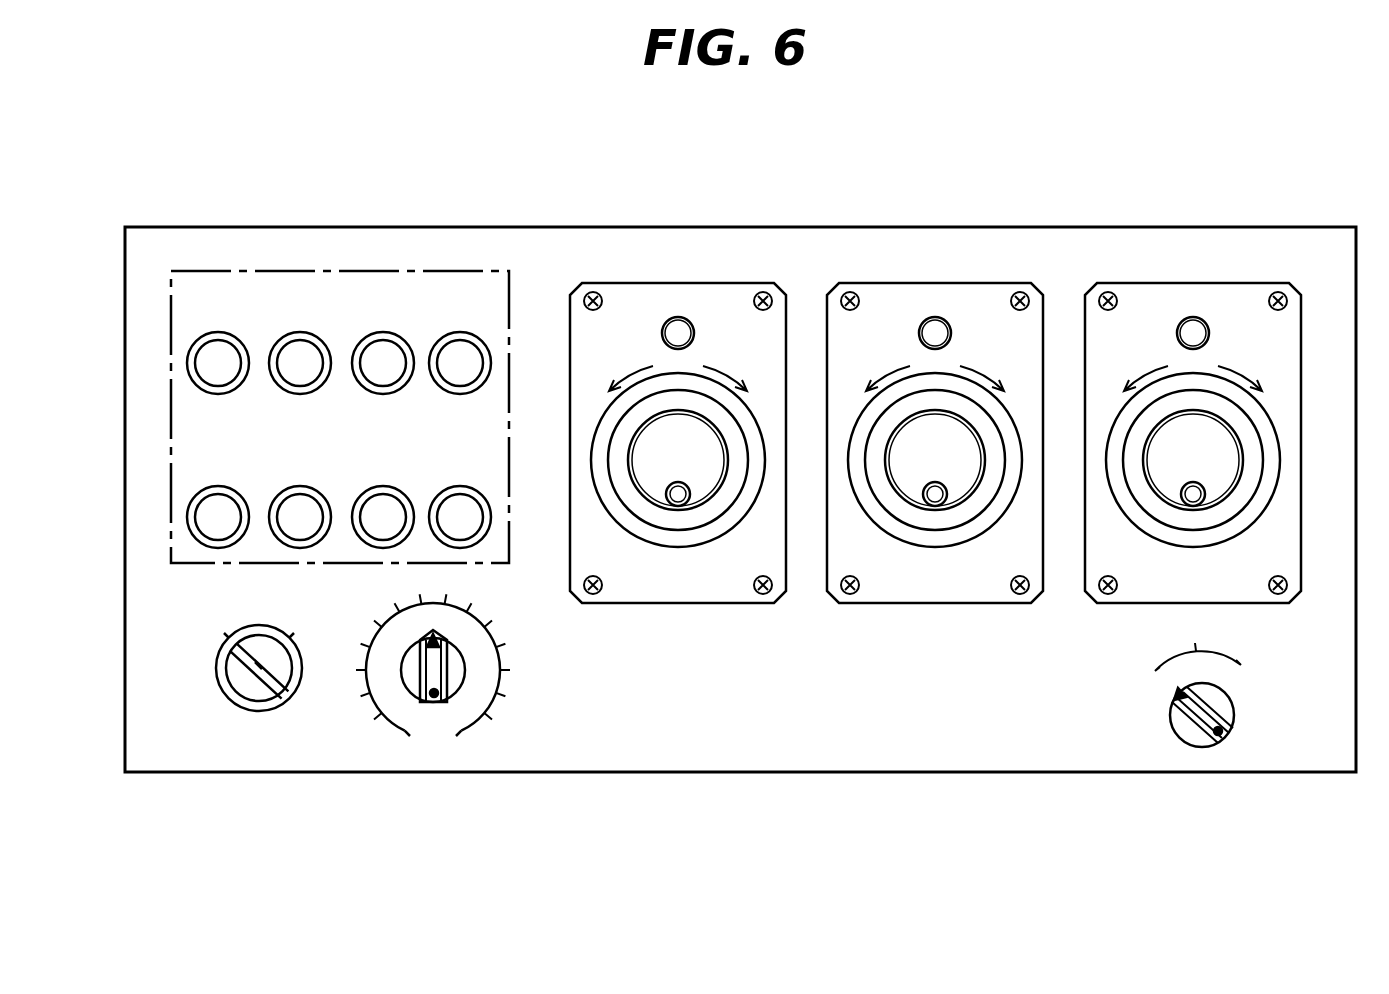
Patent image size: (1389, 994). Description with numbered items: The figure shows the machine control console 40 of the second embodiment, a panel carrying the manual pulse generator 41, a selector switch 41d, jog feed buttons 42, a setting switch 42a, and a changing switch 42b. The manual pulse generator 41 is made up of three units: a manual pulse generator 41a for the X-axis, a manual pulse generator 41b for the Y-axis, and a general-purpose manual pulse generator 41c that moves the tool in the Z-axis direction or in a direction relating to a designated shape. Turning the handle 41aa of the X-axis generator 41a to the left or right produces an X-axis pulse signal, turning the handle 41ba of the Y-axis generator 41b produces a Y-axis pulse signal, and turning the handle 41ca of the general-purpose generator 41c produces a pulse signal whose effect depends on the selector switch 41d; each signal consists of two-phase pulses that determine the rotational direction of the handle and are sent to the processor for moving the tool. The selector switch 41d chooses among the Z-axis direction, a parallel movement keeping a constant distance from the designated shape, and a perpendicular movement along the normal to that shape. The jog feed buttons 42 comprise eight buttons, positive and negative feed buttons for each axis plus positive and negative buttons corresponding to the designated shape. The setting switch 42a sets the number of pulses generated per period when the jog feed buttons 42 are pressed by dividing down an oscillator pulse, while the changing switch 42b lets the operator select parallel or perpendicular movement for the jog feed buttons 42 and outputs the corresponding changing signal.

The machine control console 40 is at (504, 224).
The manual pulse generator 41 is at (1000, 262).
The manual pulse generator for an X-axis 41a is at (623, 283).
The manual pulse generator for a Y-axis 41b is at (877, 283).
The general-purpose manual pulse generator 41c is at (1133, 283).
The handle 41aa is at (690, 500).
The handle 41ba is at (947, 500).
The handle 41ca is at (1205, 500).
The selector switch 41d is at (1172, 728).
The jog feed buttons 42 is at (219, 271).
The setting switch 42a is at (434, 702).
The changing switch 42b is at (236, 690).